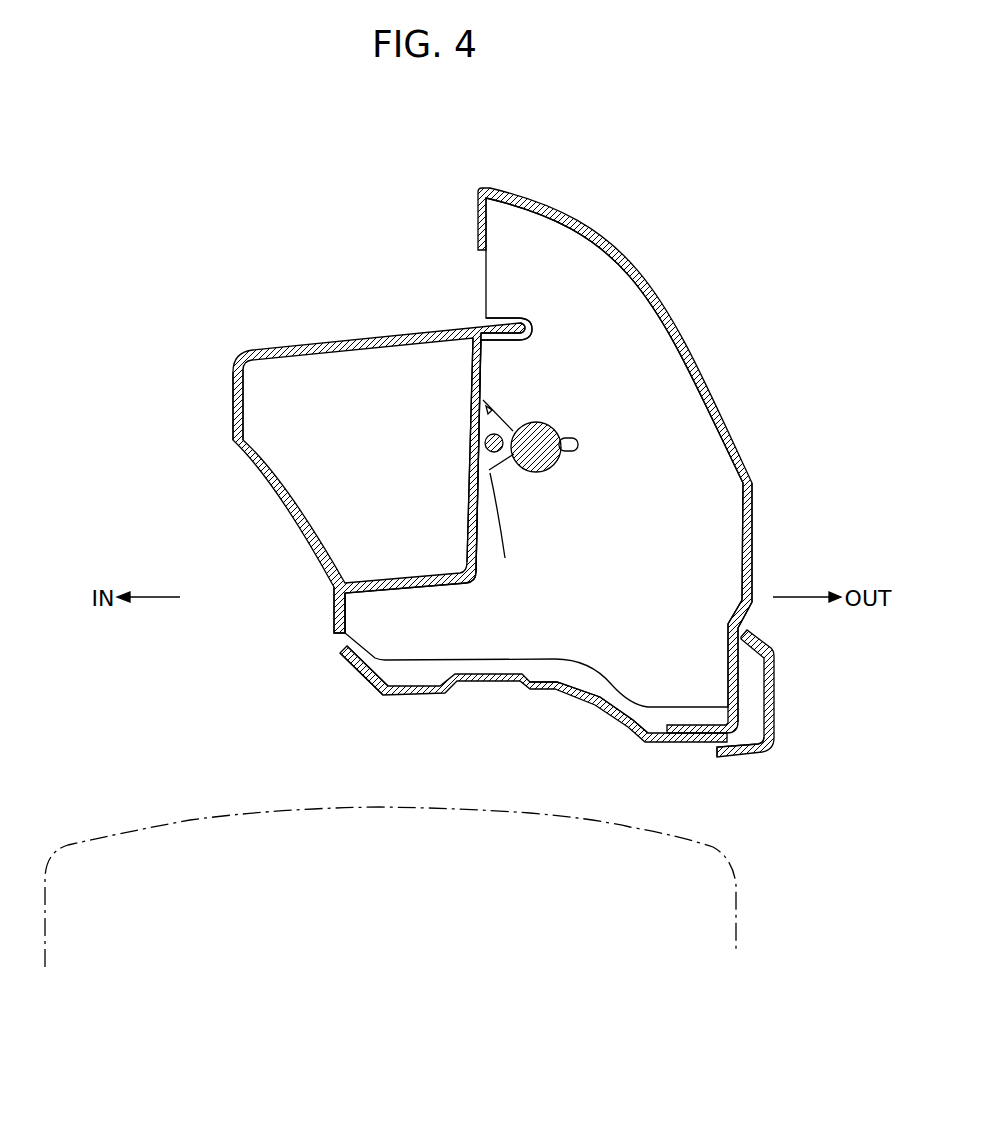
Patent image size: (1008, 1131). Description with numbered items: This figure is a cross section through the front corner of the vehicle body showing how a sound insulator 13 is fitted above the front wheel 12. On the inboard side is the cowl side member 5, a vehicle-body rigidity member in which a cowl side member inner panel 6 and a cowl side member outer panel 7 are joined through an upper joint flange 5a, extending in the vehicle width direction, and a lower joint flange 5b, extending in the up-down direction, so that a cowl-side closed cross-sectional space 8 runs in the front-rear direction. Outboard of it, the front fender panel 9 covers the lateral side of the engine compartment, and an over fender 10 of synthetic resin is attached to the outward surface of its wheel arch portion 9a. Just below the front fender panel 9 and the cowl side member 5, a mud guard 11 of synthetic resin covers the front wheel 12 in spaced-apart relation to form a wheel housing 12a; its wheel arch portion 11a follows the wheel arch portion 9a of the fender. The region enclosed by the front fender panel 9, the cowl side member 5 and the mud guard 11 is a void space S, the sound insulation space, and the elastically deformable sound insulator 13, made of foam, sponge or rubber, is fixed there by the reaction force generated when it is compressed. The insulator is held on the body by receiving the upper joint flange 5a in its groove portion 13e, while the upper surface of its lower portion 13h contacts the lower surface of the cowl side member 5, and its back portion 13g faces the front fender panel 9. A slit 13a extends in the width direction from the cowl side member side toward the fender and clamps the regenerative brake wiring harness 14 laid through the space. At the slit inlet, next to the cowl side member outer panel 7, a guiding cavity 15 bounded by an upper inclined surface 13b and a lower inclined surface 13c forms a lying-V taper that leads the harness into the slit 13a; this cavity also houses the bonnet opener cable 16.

The cowl side member 5 is at (325, 330).
The upper joint flange 5a is at (510, 318).
The lower joint flange 5b is at (331, 612).
The cowl side member inner panel 6 is at (231, 395).
The cowl side member outer panel 7 is at (475, 362).
The cowl-side closed cross-sectional space 8 is at (308, 441).
The front fender panel 9 is at (735, 432).
The wheel arch portion 9a is at (770, 667).
The over fender 10 is at (772, 734).
The mud guard 11 is at (486, 686).
The wheel arch portion 11a is at (541, 690).
The front wheel 12 is at (186, 818).
The wheel housing 12a is at (600, 787).
The sound insulator 13 is at (661, 567).
The slit 13a is at (582, 444).
The upper inclined surface 13b is at (489, 407).
The lower inclined surface 13c is at (507, 531).
The groove portion 13e is at (535, 336).
The back portion 13g is at (683, 327).
The lower portion 13h is at (366, 634).
The regenerative brake wiring harness 14 is at (541, 475).
The guiding cavity 15 is at (483, 433).
The bonnet opener cable 16 is at (475, 460).
The void space S is at (663, 406).